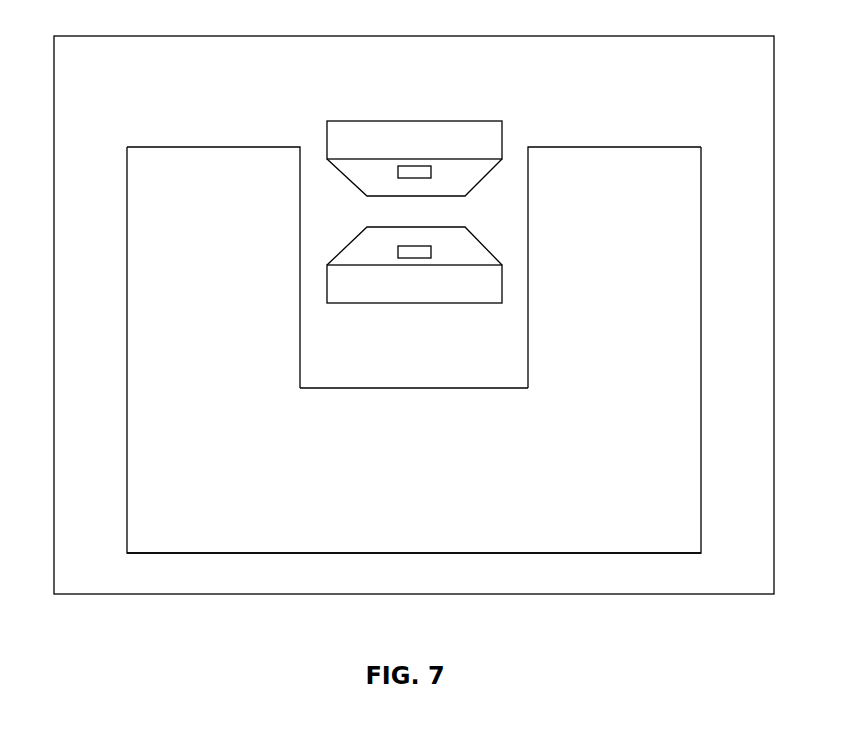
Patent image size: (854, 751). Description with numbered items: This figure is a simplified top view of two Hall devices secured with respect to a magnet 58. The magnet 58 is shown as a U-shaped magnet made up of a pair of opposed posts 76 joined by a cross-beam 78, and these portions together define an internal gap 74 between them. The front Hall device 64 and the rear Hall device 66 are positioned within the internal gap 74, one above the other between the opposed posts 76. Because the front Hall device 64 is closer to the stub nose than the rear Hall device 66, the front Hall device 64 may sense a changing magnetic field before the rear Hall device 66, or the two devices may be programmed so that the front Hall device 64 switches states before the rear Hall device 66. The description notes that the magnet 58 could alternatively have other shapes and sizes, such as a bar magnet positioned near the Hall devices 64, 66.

The magnet 58 is at (140, 527).
The front Hall device 64 is at (486, 135).
The rear Hall device 66 is at (393, 283).
The internal gap 74 is at (415, 364).
The opposed posts 76 is at (139, 348).
The cross-beam 78 is at (632, 535).